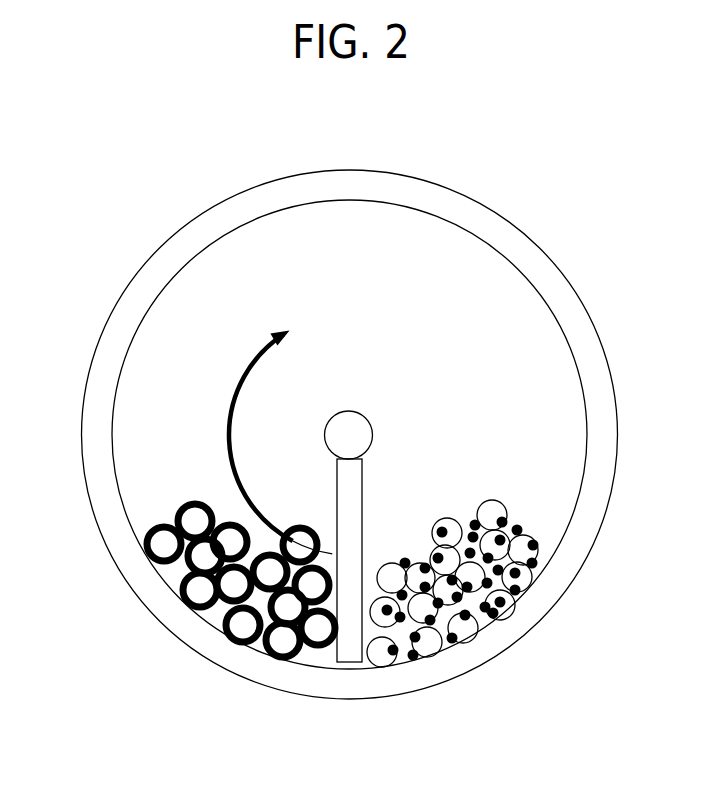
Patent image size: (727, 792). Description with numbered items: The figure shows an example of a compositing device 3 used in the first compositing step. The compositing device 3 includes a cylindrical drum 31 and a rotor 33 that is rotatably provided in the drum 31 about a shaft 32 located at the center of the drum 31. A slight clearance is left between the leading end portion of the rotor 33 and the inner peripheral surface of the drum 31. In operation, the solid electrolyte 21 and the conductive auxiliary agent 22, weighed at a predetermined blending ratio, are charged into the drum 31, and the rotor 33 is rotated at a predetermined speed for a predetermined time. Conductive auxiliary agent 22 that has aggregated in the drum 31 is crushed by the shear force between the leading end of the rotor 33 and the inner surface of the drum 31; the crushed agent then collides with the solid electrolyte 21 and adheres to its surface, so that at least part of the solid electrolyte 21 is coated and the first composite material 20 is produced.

The compositing device 3 is at (78, 196).
The first composite material 20 is at (192, 518).
The solid electrolyte 21 is at (480, 504).
The conductive auxiliary agent 22 is at (522, 520).
The cylindrical drum 31 is at (512, 232).
The shaft 32 is at (357, 423).
The rotor 33 is at (355, 490).